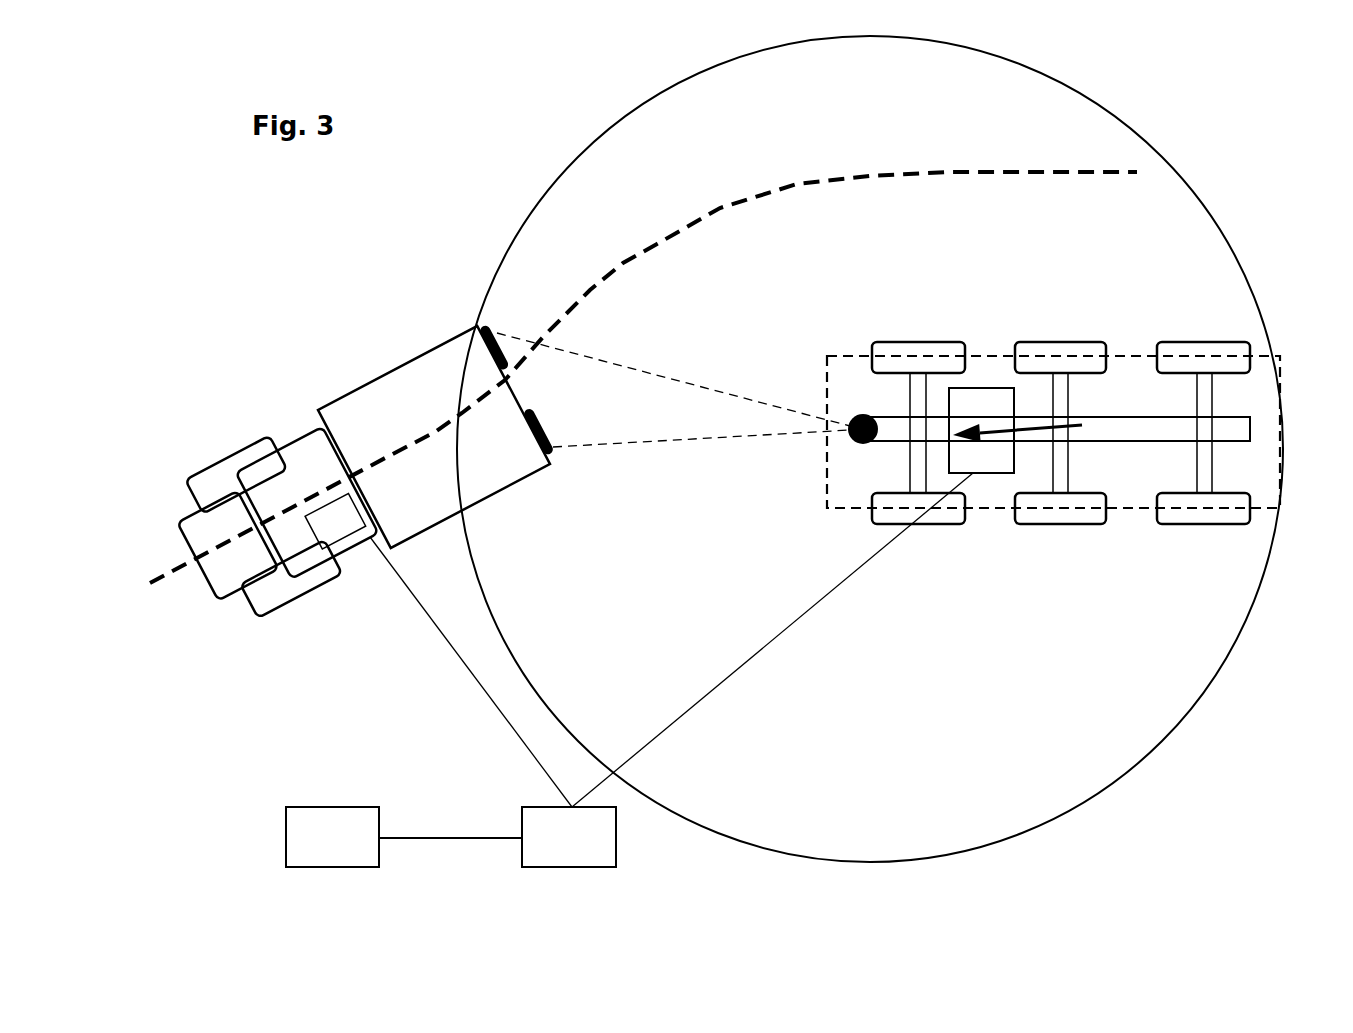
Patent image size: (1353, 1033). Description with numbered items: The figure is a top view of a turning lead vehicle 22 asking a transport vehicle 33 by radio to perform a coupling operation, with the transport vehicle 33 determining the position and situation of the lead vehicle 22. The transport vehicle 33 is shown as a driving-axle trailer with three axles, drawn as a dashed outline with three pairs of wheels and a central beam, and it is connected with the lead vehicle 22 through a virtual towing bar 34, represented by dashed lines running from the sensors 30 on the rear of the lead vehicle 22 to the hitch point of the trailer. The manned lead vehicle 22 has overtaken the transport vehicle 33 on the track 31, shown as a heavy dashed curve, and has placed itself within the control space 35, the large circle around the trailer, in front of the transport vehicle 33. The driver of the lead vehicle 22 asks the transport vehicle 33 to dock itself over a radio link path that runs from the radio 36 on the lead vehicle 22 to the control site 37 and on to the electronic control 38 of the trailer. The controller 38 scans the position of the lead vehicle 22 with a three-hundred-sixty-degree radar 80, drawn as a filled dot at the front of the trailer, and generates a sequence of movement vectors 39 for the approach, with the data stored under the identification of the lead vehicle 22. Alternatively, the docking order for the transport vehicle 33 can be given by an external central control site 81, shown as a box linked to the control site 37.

The lead vehicle 22 is at (389, 342).
The sensors 30 is at (544, 420).
The track 31 is at (1044, 159).
The transport vehicle 33 is at (1195, 314).
The virtual towing bar 34 is at (690, 383).
The control space 35 is at (687, 818).
The radio 36 is at (338, 515).
The control site 37 is at (533, 827).
The electronic control 38 is at (985, 457).
The movement vectors 39 is at (1052, 430).
The 360° radar 80 is at (855, 420).
The external central control site 81 is at (317, 828).